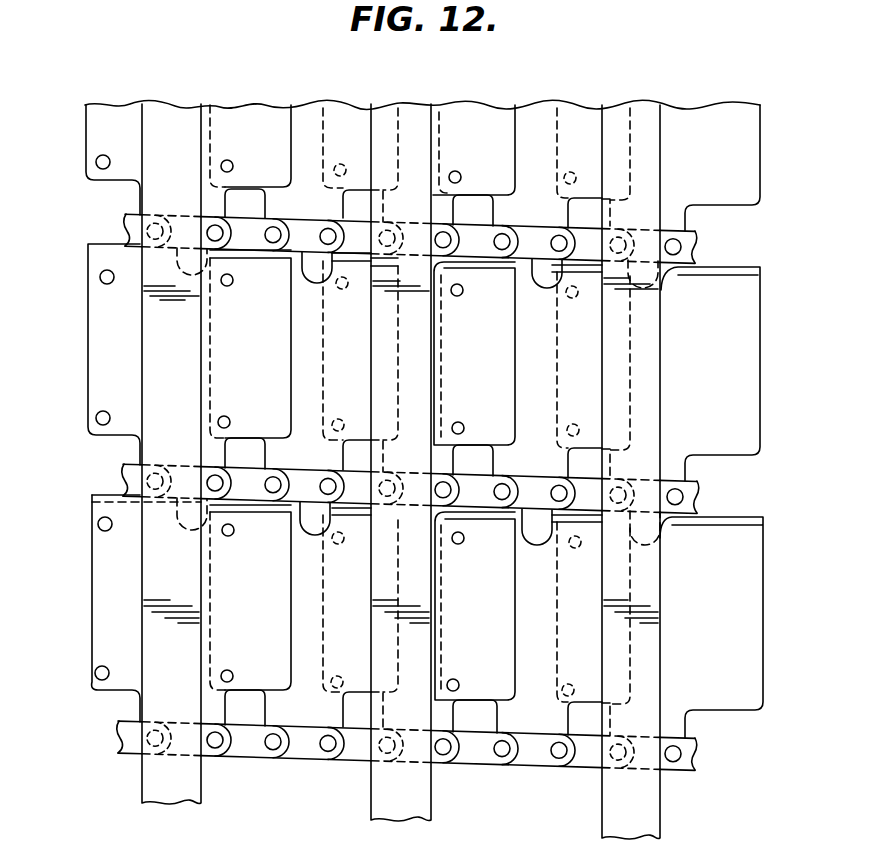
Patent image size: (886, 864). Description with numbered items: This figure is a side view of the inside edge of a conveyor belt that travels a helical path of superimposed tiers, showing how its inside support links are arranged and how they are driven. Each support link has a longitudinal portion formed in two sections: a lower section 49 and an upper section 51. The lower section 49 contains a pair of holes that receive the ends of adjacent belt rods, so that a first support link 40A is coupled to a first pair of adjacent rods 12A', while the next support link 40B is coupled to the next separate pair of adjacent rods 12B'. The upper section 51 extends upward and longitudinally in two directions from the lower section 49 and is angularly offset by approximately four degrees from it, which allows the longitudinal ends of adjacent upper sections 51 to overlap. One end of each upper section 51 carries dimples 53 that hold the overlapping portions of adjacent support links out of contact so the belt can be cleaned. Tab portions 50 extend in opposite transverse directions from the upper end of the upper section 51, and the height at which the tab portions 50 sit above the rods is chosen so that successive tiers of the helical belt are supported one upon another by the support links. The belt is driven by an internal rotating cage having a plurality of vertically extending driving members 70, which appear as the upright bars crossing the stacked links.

The driving member 70 is at (184, 380).
The upper section 51 is at (127, 607).
The dimple 53 is at (98, 524).
The tab portion 50 is at (98, 494).
The first support link 40A is at (90, 625).
The next support link 40B is at (266, 710).
The lower section 49 is at (213, 712).
The first pair of adjacent rods 12A' is at (401, 500).
The next pair of adjacent rods 12B' is at (320, 768).